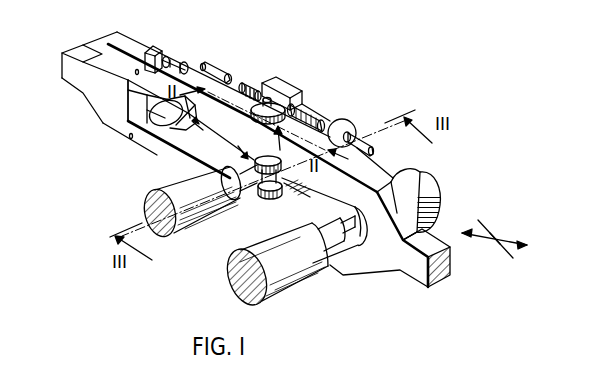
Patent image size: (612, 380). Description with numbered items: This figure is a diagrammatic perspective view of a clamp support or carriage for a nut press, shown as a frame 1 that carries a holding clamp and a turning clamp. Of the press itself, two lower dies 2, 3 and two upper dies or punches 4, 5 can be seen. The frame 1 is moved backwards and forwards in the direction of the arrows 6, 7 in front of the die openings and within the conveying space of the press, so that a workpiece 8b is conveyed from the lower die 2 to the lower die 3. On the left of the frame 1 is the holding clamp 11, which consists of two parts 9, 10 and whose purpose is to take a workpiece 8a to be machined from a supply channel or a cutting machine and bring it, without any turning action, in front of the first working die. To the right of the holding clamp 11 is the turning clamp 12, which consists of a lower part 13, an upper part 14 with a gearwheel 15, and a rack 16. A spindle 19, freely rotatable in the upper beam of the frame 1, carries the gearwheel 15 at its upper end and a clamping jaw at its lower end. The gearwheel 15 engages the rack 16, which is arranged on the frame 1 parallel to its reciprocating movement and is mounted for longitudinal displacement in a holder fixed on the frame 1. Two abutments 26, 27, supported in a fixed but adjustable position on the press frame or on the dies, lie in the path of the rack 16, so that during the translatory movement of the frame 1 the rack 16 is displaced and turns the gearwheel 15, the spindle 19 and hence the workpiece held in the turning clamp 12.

The frame 1 is at (61, 81).
The lower die 2 is at (338, 120).
The lower die 3 is at (427, 192).
The upper die or punch 4 is at (146, 197).
The upper die or punch 5 is at (293, 270).
The arrow 6 is at (506, 228).
The arrow 7 is at (493, 243).
The workpiece 8a is at (140, 132).
The workpiece 8b is at (297, 190).
The part of holding clamp 9 is at (140, 98).
The part of holding clamp 10 is at (158, 130).
The holding clamp 11 is at (207, 130).
The turning clamp 12 is at (234, 147).
The lower part 13 is at (246, 205).
The upper part 14 is at (288, 146).
The gearwheel 15 is at (276, 112).
The rack 16 is at (254, 85).
The spindle 19 is at (272, 88).
The abutment 26 is at (376, 150).
The abutment 27 is at (228, 74).